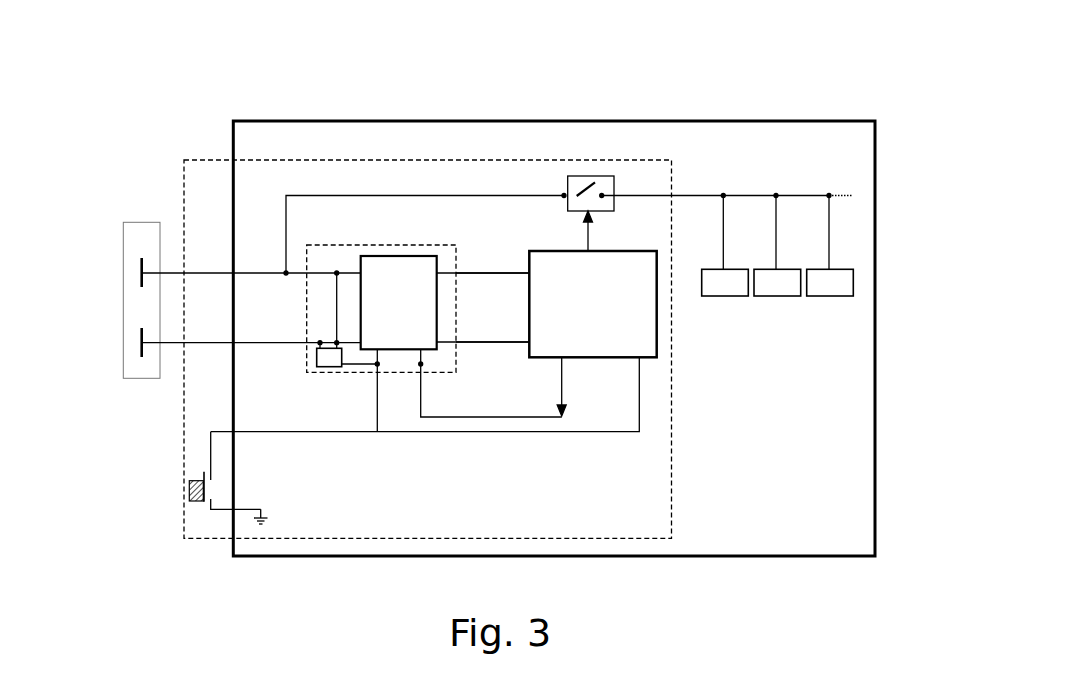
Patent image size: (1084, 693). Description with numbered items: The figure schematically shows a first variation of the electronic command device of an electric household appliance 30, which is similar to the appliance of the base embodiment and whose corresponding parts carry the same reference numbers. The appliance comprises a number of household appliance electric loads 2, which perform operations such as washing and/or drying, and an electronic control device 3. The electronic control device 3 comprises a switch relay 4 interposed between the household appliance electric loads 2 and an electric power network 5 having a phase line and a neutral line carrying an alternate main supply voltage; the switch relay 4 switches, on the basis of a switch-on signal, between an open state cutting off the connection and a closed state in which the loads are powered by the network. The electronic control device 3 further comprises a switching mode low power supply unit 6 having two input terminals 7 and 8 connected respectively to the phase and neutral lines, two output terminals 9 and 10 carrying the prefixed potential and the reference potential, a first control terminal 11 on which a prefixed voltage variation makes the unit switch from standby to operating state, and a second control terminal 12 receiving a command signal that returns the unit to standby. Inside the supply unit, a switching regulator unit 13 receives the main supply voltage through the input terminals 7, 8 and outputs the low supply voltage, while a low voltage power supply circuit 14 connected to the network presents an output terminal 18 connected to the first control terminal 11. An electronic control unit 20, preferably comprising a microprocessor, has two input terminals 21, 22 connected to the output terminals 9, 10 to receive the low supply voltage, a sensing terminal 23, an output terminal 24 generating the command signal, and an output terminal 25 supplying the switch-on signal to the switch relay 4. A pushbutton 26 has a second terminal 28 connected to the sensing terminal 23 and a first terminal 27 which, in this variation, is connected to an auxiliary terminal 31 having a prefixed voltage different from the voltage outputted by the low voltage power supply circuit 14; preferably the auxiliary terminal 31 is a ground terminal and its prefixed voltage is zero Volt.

The household appliance electric loads 2 is at (719, 293).
The electronic control device 3 is at (501, 158).
The switch relay 4 is at (588, 176).
The electric power network 5 is at (148, 222).
The switching mode low power supply unit 6 is at (376, 243).
The input terminal 7 is at (286, 270).
The input terminal 8 is at (285, 343).
The output terminal 9 is at (478, 275).
The output terminal 10 is at (462, 343).
The first control terminal 11 is at (377, 380).
The second control terminal 12 is at (421, 388).
The switching regulator unit 13 is at (387, 314).
The low voltage power supply circuit 14 is at (327, 367).
The output terminal 18 is at (370, 365).
The electronic control unit 20 is at (581, 309).
The input terminal 21 is at (508, 275).
The input terminal 22 is at (517, 345).
The sensing terminal 23 is at (639, 373).
The output terminal 24 is at (560, 373).
The output terminal 25 is at (587, 243).
The pushbutton 26 is at (188, 489).
The first terminal 27 is at (204, 508).
The second terminal 28 is at (210, 463).
The electric household appliance 30 is at (728, 121).
The auxiliary terminal 31 is at (253, 510).